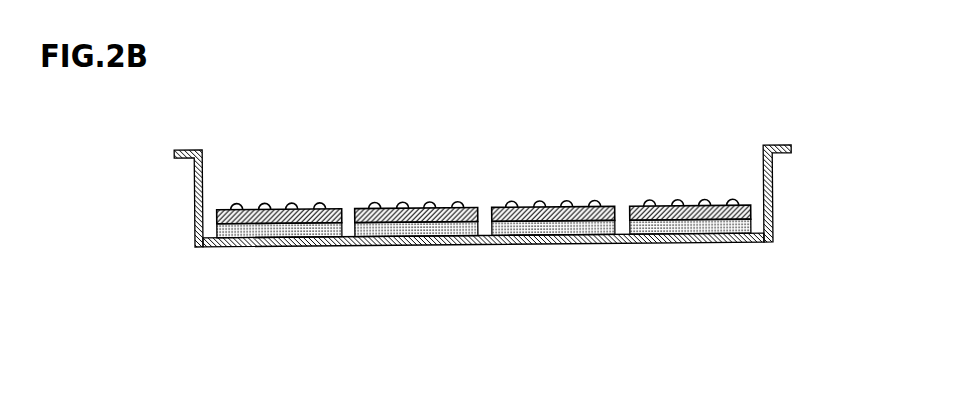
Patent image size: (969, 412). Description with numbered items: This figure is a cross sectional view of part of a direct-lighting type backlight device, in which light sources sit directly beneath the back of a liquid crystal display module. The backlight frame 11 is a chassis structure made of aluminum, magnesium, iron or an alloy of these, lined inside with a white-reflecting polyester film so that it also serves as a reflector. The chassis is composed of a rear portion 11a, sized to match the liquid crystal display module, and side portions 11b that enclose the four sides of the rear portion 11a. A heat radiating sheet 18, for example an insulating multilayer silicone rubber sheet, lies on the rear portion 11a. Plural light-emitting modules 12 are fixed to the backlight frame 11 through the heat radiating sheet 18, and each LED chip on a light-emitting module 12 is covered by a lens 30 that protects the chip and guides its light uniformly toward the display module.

The backlight frame 11 is at (485, 243).
The rear portion 11a is at (232, 248).
The side portions 11b is at (193, 177).
The light-emitting module 12 is at (484, 226).
The heat radiating sheet 18 is at (285, 233).
The lens 30 is at (318, 205).